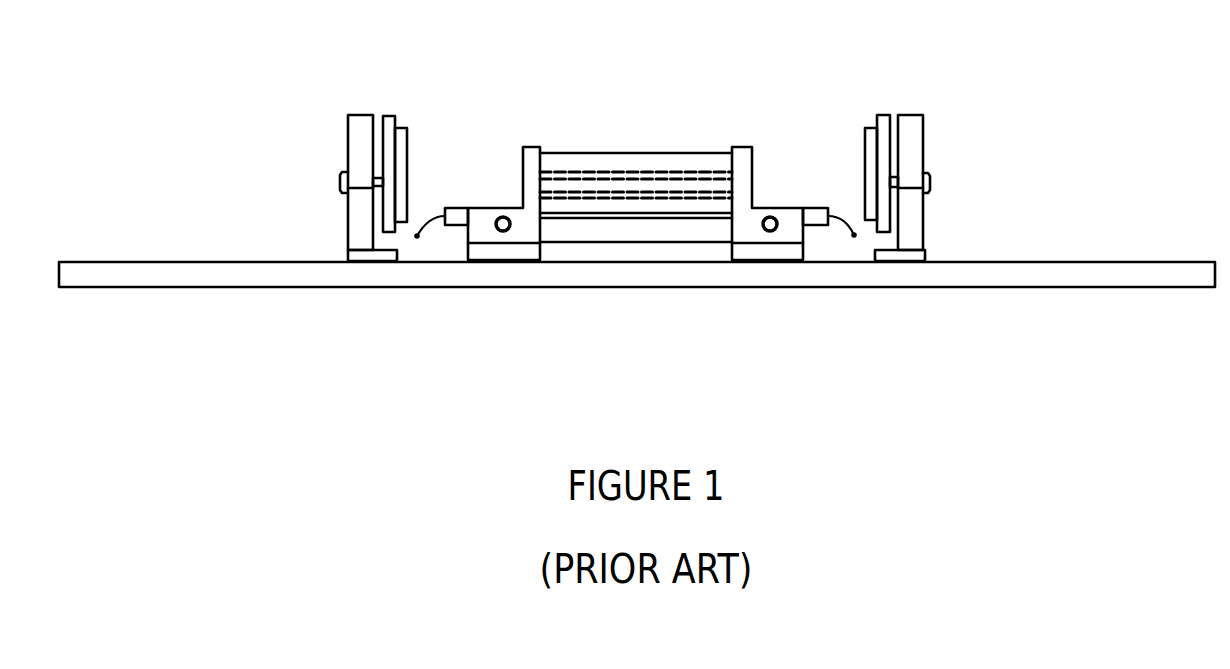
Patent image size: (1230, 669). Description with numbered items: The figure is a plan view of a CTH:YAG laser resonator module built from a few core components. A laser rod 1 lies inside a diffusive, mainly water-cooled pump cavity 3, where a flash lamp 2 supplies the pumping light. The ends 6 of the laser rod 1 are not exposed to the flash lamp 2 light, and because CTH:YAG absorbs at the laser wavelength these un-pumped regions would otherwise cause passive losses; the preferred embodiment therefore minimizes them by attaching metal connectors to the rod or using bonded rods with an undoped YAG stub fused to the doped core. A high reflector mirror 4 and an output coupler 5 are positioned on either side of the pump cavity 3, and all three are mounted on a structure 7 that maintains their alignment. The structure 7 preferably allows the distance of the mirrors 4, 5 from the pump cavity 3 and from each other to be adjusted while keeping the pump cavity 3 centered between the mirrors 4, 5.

The laser rod 1 is at (595, 172).
The flash lamp 2 is at (693, 195).
The pump cavity 3 is at (693, 152).
The high reflector mirror 4 is at (408, 140).
The output coupler 5 is at (865, 136).
The un-pumped ends of the laser rod 6 is at (531, 166).
The structure 7 is at (1040, 287).